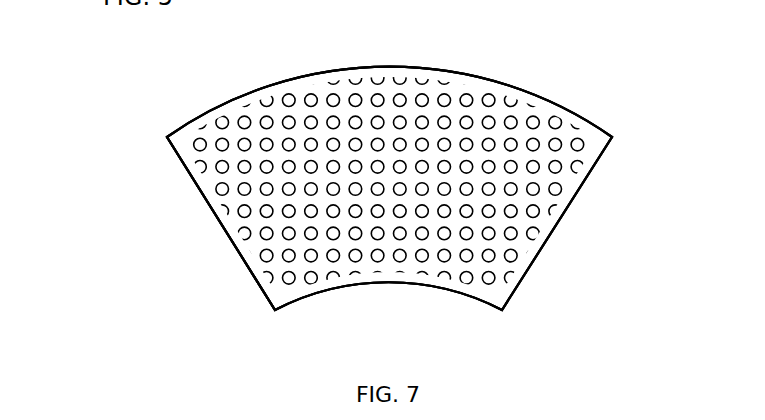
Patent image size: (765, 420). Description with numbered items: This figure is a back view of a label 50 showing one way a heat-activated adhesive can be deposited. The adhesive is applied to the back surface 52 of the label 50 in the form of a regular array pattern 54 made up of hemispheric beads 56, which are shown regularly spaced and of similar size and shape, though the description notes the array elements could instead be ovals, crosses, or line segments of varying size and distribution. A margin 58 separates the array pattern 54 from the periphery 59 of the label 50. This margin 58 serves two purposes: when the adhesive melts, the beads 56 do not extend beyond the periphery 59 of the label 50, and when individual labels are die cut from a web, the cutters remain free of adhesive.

The label 50 is at (266, 84).
The back surface 52 is at (548, 133).
The array pattern 54 is at (215, 210).
The hemispheric beads 56 is at (492, 116).
The margin 58 is at (363, 70).
The periphery 59 is at (460, 72).